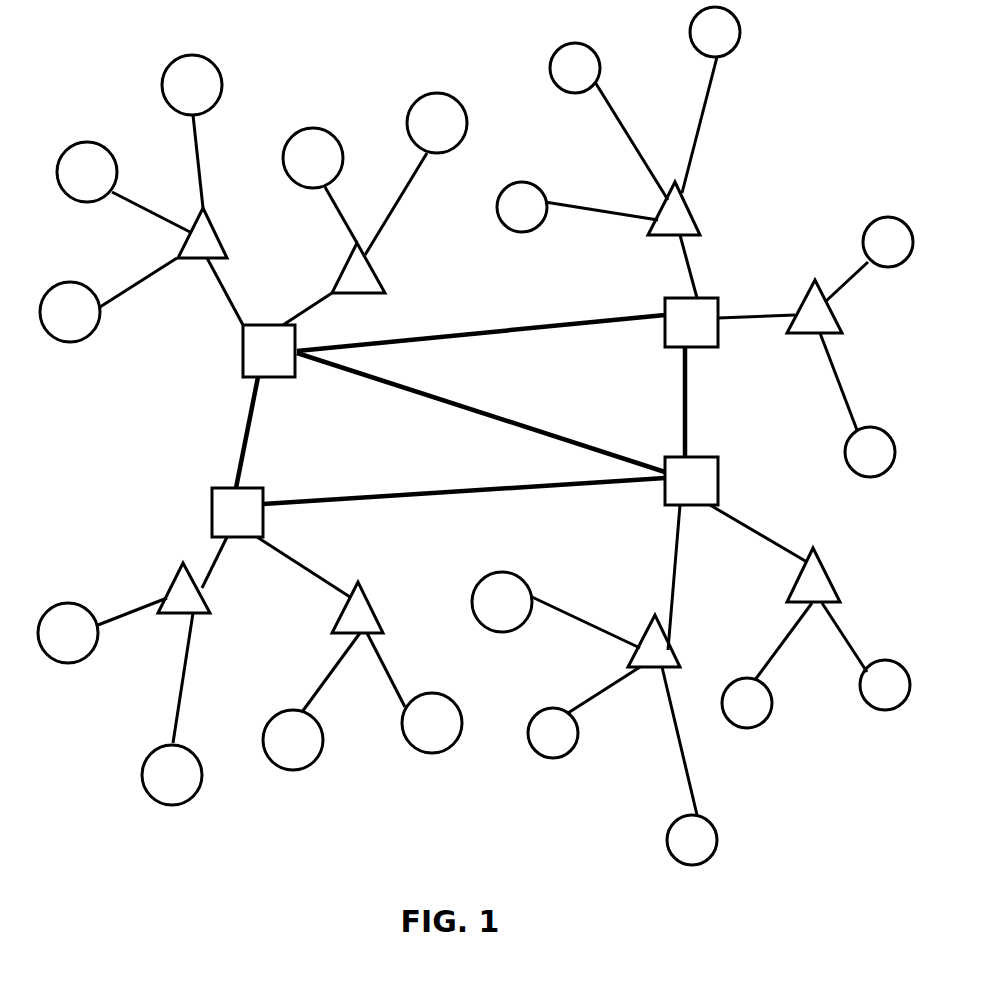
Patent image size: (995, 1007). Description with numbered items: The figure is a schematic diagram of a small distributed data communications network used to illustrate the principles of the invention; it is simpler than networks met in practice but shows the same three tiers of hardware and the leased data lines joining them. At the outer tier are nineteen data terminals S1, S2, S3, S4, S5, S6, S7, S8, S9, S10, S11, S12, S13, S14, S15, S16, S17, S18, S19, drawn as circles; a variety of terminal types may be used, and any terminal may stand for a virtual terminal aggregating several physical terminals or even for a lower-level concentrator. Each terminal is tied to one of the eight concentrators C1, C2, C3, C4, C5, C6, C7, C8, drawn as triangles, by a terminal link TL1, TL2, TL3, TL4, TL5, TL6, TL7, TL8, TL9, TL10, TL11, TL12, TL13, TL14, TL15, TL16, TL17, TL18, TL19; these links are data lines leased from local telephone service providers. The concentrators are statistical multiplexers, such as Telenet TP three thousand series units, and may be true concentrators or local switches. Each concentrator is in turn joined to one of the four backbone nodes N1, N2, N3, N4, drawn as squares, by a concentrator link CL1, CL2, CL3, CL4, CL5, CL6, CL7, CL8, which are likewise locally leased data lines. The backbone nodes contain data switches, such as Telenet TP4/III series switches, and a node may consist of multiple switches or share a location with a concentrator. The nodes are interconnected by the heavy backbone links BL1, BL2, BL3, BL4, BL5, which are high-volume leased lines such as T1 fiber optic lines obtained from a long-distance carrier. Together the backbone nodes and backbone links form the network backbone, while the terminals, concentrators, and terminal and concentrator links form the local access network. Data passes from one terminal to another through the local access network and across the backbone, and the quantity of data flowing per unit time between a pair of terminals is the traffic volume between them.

The backbone node N1 is at (691, 322).
The backbone node N2 is at (691, 481).
The backbone node N3 is at (237, 512).
The backbone node N4 is at (269, 351).
The concentrator C1 is at (674, 208).
The concentrator C2 is at (814, 306).
The concentrator C3 is at (813, 575).
The concentrator C4 is at (654, 641).
The concentrator C5 is at (357, 607).
The concentrator C6 is at (184, 588).
The concentrator C7 is at (202, 233).
The concentrator C8 is at (358, 268).
The data terminal S1 is at (522, 207).
The data terminal S2 is at (575, 68).
The data terminal S3 is at (715, 32).
The data terminal S4 is at (888, 242).
The data terminal S5 is at (870, 452).
The data terminal S6 is at (885, 685).
The data terminal S7 is at (747, 703).
The data terminal S8 is at (692, 840).
The data terminal S9 is at (553, 733).
The data terminal S10 is at (502, 602).
The data terminal S11 is at (432, 723).
The data terminal S12 is at (293, 740).
The data terminal S13 is at (172, 775).
The data terminal S14 is at (68, 633).
The data terminal S15 is at (70, 312).
The data terminal S16 is at (87, 172).
The data terminal S17 is at (192, 85).
The data terminal S18 is at (313, 158).
The data terminal S19 is at (437, 123).
The terminal link TL1 is at (601, 226).
The terminal link TL2 is at (617, 141).
The terminal link TL3 is at (721, 125).
The terminal link TL4 is at (839, 264).
The terminal link TL5 is at (824, 381).
The terminal link TL6 is at (851, 637).
The terminal link TL7 is at (772, 641).
The terminal link TL8 is at (664, 741).
The terminal link TL9 is at (593, 690).
The terminal link TL10 is at (586, 612).
The terminal link TL11 is at (400, 670).
The terminal link TL12 is at (312, 672).
The terminal link TL13 is at (157, 678).
The terminal link TL14 is at (128, 600).
The terminal link TL15 is at (134, 282).
The terminal link TL16 is at (151, 201).
The terminal link TL17 is at (225, 161).
The terminal link TL18 is at (319, 215).
The terminal link TL19 is at (409, 204).
The concentrator link CL1 is at (666, 266).
The concentrator link CL2 is at (756, 298).
The concentrator link CL3 is at (758, 533).
The concentrator link CL4 is at (655, 577).
The concentrator link CL5 is at (303, 568).
The concentrator link CL6 is at (192, 555).
The concentrator link CL7 is at (212, 291).
The concentrator link CL8 is at (300, 302).
The backbone link BL1 is at (660, 402).
The backbone link BL2 is at (464, 487).
The backbone link BL3 is at (228, 432).
The backbone link BL4 is at (481, 412).
The backbone link BL5 is at (481, 343).